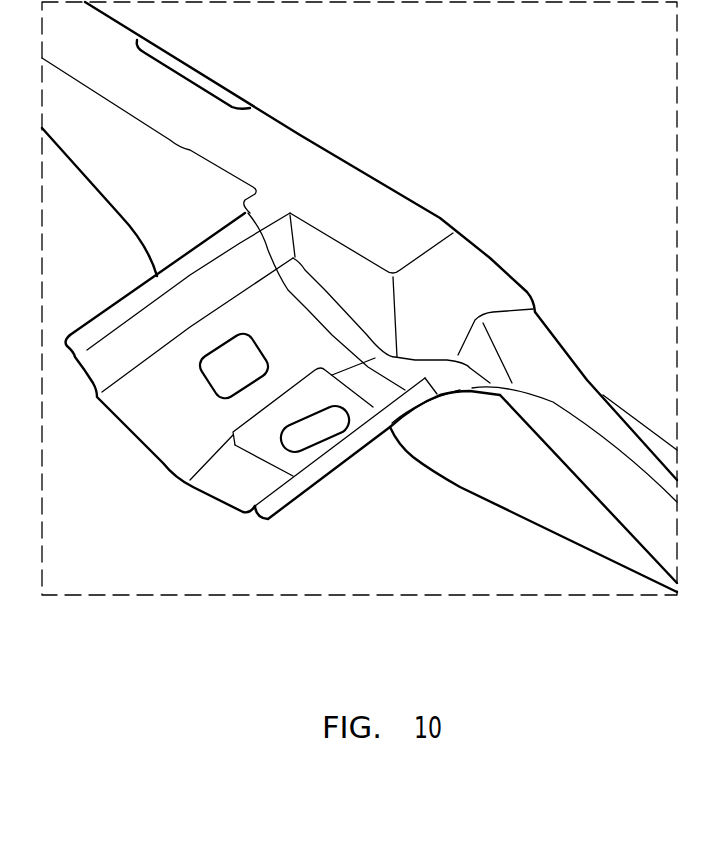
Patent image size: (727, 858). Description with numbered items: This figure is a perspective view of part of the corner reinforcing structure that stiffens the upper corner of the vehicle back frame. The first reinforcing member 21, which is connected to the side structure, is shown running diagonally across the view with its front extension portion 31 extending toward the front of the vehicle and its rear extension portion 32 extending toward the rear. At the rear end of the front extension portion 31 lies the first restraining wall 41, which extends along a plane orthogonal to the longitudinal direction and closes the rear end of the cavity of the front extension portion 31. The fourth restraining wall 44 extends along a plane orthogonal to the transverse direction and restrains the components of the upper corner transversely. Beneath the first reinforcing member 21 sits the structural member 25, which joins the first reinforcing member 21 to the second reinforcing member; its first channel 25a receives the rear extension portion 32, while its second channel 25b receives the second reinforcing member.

The first reinforcing member 21 is at (460, 212).
The front extension portion 31 is at (268, 130).
The rear extension portion 32 is at (548, 352).
The first restraining wall 41 is at (473, 277).
The fourth restraining wall 44 is at (355, 277).
The structural member 25 is at (354, 476).
The first channel 25a is at (655, 535).
The second channel 25b is at (183, 445).